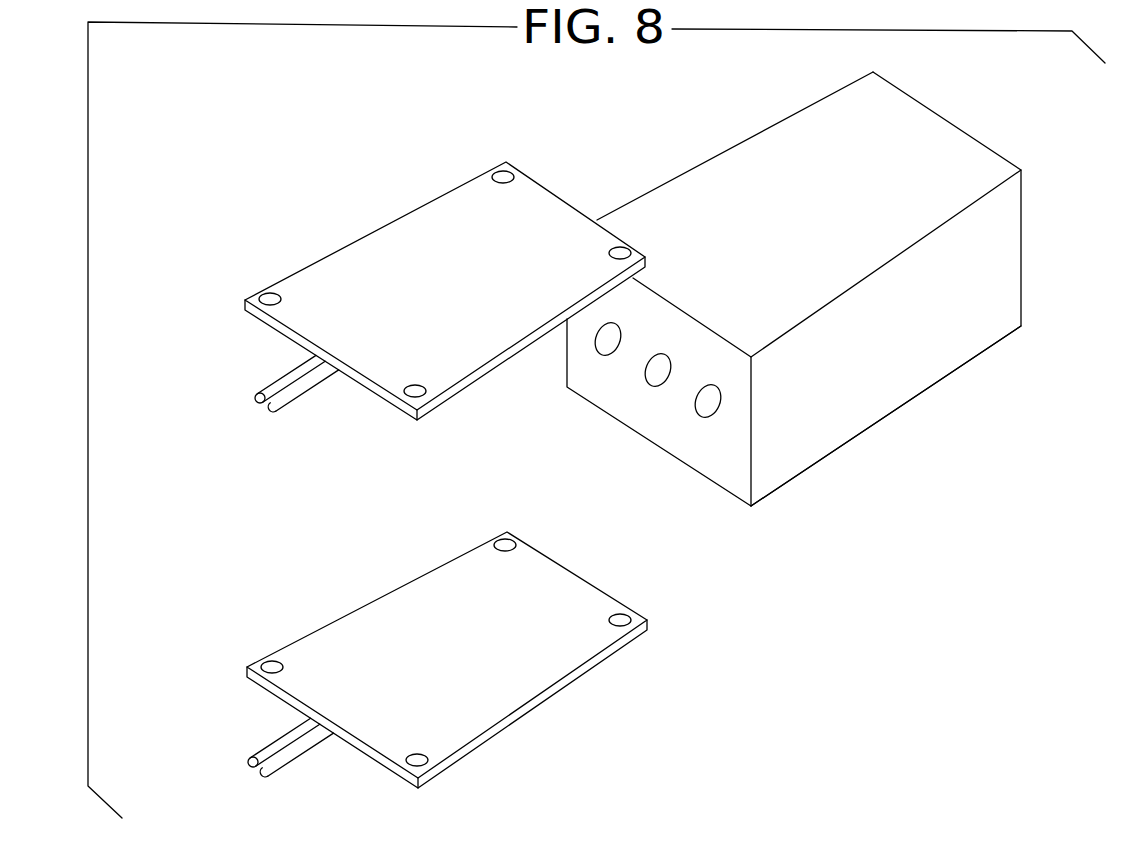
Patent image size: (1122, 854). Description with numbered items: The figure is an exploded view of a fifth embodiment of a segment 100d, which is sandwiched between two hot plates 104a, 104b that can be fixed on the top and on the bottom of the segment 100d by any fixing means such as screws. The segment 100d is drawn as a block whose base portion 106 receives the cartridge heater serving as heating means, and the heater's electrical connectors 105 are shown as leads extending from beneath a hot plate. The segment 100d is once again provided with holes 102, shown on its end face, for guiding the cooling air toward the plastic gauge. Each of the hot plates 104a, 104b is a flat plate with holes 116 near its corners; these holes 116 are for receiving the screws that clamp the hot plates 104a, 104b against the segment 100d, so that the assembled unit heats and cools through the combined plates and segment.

The segment 100d is at (970, 333).
The holes 102 is at (707, 411).
The hot plate 104a is at (372, 245).
The hot plate 104b is at (527, 726).
The electrical connectors 105 is at (250, 758).
The base portion 106 is at (892, 417).
The holes 116 is at (270, 297).